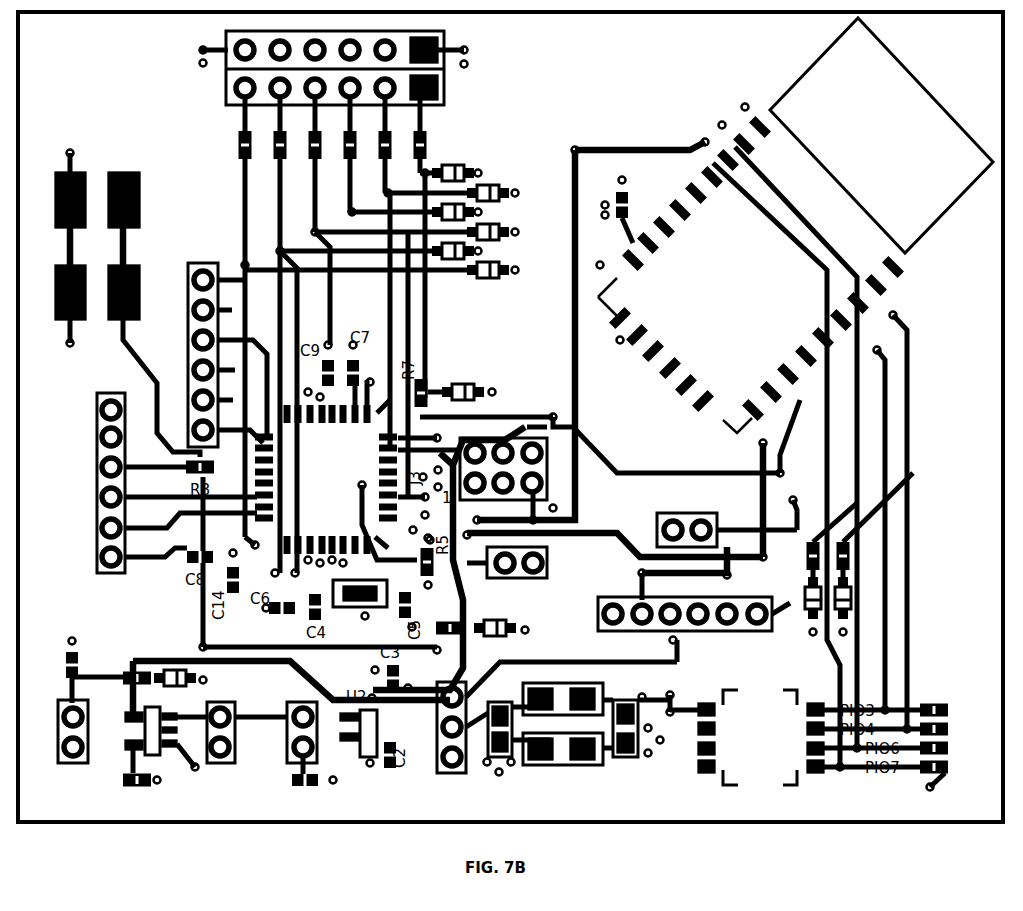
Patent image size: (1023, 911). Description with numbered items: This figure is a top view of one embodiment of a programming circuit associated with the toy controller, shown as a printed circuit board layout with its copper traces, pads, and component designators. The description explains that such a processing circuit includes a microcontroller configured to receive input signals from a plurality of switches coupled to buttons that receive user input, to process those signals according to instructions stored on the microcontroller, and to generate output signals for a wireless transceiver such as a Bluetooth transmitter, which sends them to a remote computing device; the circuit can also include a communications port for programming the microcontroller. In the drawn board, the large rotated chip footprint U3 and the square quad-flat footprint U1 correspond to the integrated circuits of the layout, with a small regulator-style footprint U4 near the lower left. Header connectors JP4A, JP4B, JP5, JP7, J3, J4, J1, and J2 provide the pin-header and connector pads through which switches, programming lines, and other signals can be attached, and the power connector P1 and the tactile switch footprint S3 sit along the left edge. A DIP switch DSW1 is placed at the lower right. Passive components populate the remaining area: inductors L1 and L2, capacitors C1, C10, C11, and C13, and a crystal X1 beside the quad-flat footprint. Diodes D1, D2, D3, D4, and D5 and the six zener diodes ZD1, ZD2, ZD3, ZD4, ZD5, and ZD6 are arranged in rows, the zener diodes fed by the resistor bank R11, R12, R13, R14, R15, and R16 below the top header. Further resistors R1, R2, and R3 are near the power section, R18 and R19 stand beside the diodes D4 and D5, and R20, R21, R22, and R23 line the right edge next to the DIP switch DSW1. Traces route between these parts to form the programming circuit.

The microcontroller chip U3 is at (788, 226).
The QFP integrated circuit U1 is at (352, 478).
The header connector JP4A is at (306, 68).
The header connector JP4B is at (319, 52).
The header connector JP5 is at (227, 344).
The jumper header JP7 is at (709, 519).
The header connector J3 is at (508, 481).
The header connector J4 is at (451, 739).
The switch S3 is at (111, 299).
The DIP switch DSW1 is at (757, 725).
The power connector P1 is at (66, 746).
The connector J1 is at (247, 723).
The connector J2 is at (308, 723).
The inductor L1 is at (563, 689).
The inductor L2 is at (563, 764).
The capacitor C1 is at (314, 783).
The capacitor C10 is at (83, 665).
The capacitor C11 is at (605, 207).
The capacitor C13 is at (643, 734).
The crystal X1 is at (360, 606).
The voltage regulator U4 is at (165, 741).
The diode D1 is at (501, 628).
The diode D2 is at (180, 664).
The diode D3 is at (462, 389).
The diode D4 is at (851, 614).
The diode D5 is at (805, 614).
The resistor R1 is at (449, 626).
The resistor R2 is at (286, 677).
The resistor R3 is at (142, 792).
The resistor R11 is at (255, 317).
The resistor R12 is at (290, 335).
The resistor R13 is at (325, 164).
The resistor R14 is at (360, 154).
The resistor R15 is at (395, 145).
The resistor R16 is at (430, 135).
The resistor R18 is at (874, 529).
The resistor R19 is at (831, 543).
The resistor R20 is at (953, 711).
The resistor R21 is at (953, 730).
The resistor R22 is at (953, 749).
The resistor R23 is at (953, 775).
The zener diode ZD1 is at (458, 166).
The zener diode ZD2 is at (471, 194).
The zener diode ZD3 is at (432, 213).
The zener diode ZD4 is at (434, 233).
The zener diode ZD5 is at (396, 252).
The zener diode ZD6 is at (399, 271).